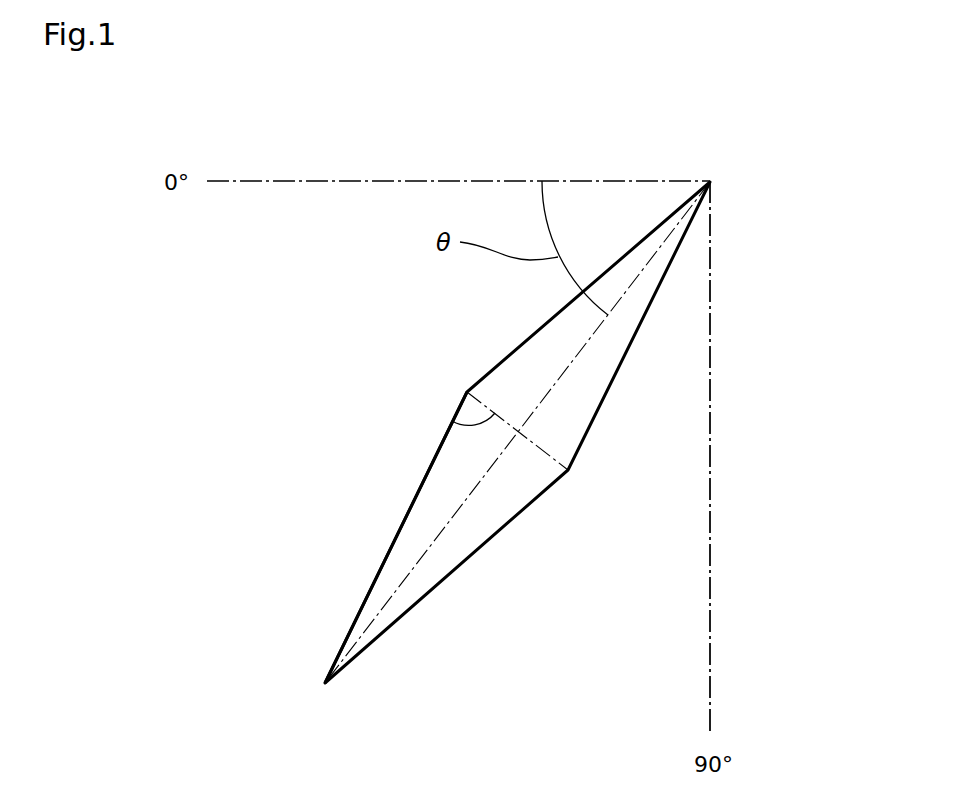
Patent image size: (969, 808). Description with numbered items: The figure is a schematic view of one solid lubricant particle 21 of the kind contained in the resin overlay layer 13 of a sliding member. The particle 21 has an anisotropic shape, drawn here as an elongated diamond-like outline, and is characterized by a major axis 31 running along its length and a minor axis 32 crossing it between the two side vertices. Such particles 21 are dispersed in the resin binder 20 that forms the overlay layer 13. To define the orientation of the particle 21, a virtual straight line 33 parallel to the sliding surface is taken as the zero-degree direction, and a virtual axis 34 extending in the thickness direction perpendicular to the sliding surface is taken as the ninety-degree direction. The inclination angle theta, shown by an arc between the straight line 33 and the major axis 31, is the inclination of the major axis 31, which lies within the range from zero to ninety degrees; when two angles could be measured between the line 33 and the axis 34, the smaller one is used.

The resin overlay layer 13 is at (458, 687).
The resin binder 20 is at (687, 410).
The solid lubricant particles 21 is at (410, 510).
The major axis 31 is at (463, 502).
The minor axis 32 is at (457, 422).
The virtual straight line 33 is at (357, 178).
The virtual axis 34 is at (708, 507).